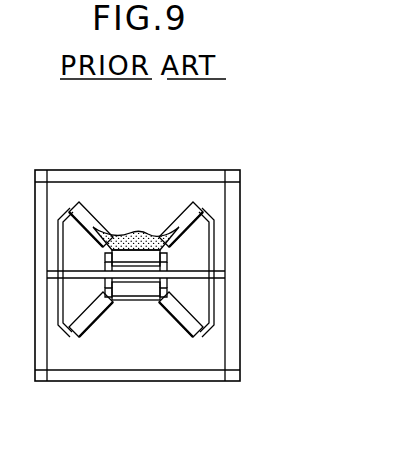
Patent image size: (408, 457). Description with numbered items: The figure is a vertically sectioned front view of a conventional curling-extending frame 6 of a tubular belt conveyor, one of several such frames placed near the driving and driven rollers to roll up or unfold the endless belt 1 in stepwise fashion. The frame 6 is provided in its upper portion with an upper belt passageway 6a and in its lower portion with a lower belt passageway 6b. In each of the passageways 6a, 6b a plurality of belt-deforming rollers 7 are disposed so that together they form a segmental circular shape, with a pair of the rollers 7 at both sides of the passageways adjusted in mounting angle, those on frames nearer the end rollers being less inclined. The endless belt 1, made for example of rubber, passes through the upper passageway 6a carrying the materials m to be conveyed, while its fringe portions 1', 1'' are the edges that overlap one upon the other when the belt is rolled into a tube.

The curling-extending frame 6 is at (230, 192).
The upper belt passageway 6a is at (187, 195).
The lower belt passageway 6b is at (127, 358).
The endless belt 1 is at (98, 190).
The fringe portion 1' is at (95, 323).
The fringe portion 1'' is at (181, 328).
The belt-deforming roller 7 is at (140, 262).
The materials to be conveyed m is at (150, 242).